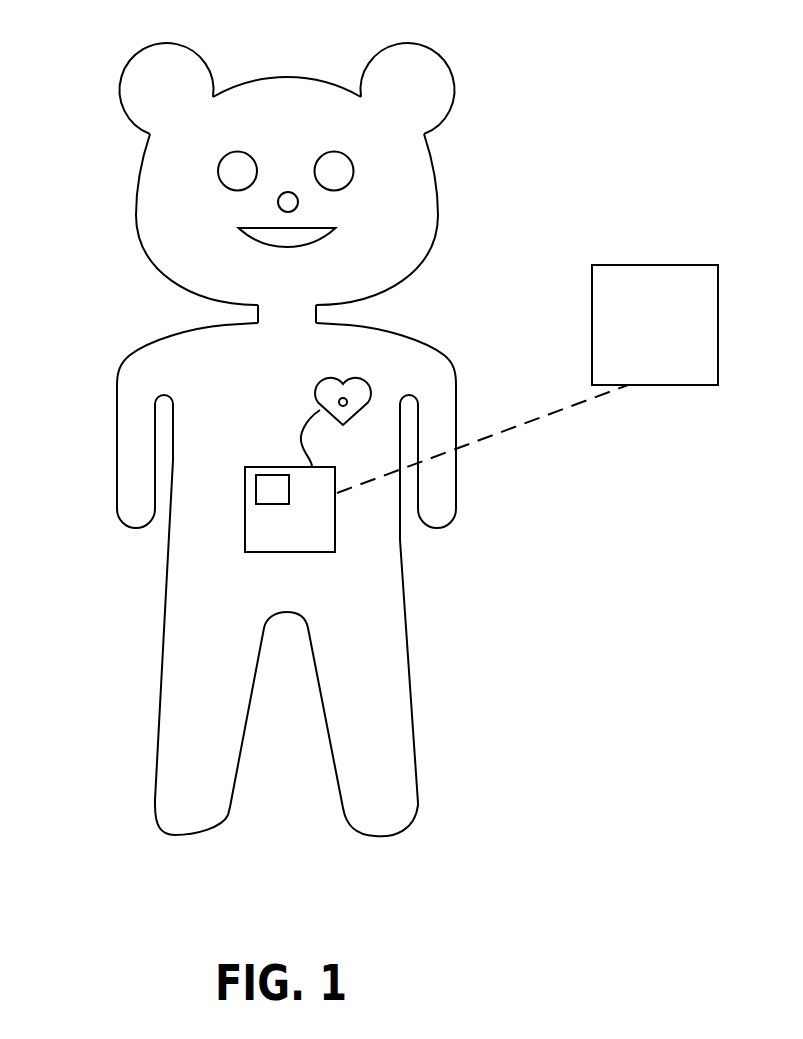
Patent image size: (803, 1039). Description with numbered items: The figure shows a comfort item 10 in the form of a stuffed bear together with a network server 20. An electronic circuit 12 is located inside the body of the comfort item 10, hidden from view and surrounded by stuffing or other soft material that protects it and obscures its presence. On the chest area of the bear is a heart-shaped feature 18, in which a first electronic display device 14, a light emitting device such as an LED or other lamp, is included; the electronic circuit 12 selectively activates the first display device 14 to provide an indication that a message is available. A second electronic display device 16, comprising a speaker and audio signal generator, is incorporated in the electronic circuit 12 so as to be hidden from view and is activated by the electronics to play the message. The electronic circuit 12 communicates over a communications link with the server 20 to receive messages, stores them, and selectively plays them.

The comfort item 10 is at (408, 337).
The electronic circuit 12 is at (265, 532).
The first electronic display device 14 is at (348, 401).
The second electronic display device 16 is at (273, 485).
The heart-shaped feature 18 is at (366, 384).
The network server 20 is at (655, 325).